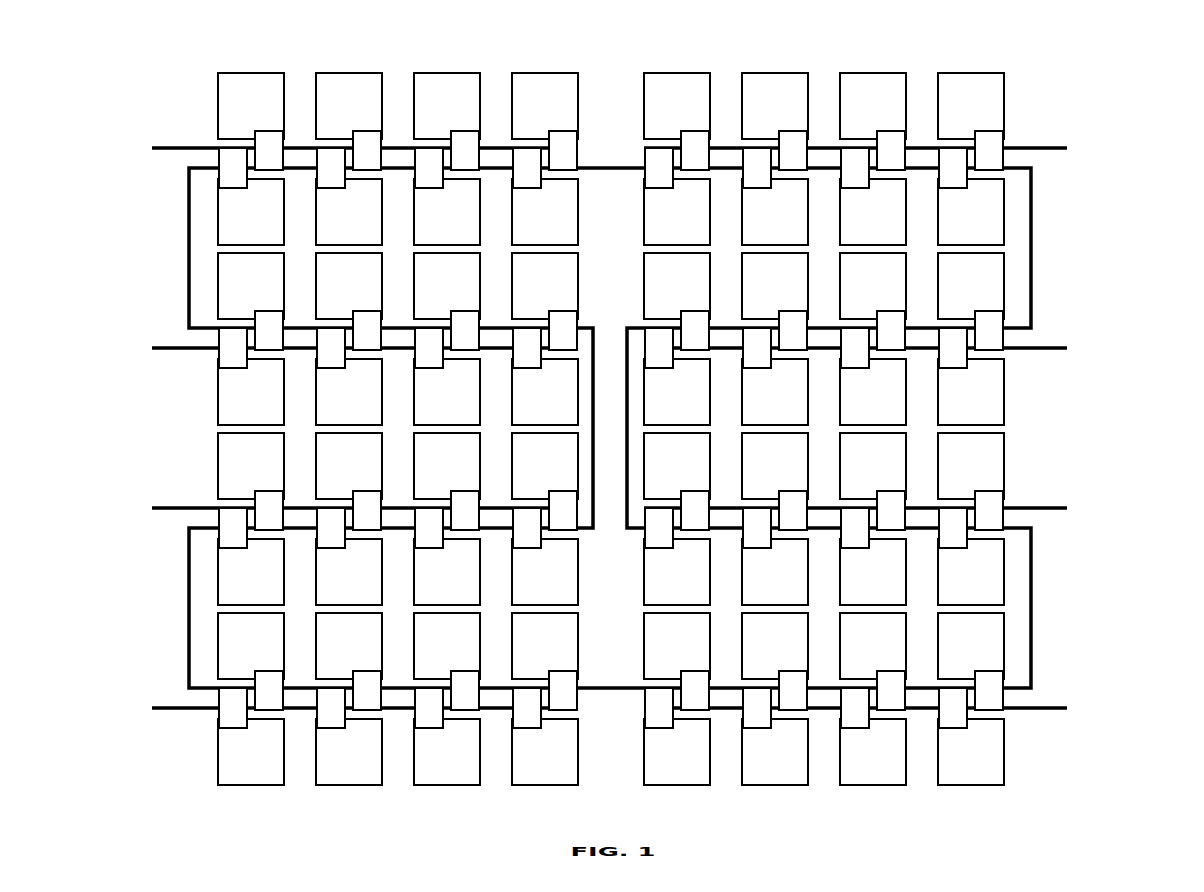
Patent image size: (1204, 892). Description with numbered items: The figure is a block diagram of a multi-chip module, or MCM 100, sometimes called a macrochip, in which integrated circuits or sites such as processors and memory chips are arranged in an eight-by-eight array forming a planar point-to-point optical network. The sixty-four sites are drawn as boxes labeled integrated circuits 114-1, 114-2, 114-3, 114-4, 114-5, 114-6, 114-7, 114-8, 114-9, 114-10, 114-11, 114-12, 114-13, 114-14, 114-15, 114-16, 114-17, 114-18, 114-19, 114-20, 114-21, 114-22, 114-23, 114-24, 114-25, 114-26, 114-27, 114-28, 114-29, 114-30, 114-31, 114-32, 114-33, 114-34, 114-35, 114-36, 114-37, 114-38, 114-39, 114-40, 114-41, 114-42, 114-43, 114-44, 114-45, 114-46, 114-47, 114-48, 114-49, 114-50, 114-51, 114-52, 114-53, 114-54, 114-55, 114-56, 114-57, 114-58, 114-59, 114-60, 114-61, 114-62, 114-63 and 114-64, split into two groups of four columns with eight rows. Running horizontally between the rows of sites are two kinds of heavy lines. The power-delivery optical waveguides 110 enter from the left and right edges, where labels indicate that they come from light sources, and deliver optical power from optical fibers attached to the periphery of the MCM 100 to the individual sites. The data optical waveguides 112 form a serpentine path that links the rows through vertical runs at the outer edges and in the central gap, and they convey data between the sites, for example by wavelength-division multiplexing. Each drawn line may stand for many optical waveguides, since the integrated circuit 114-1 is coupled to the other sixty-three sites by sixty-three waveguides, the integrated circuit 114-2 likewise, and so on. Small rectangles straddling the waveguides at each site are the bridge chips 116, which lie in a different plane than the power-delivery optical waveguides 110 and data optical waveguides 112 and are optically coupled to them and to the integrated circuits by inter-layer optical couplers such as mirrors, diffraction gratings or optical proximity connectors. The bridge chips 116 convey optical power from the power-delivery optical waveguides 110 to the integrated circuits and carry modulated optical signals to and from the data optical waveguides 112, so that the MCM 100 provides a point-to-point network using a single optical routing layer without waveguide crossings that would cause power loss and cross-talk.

The multi-chip module (MCM) 100 is at (615, 447).
The power-delivery optical waveguides 110 is at (182, 715).
The data optical waveguides 112 is at (187, 302).
The bridge chips 116 is at (544, 375).
The integrated circuit (IC) 114-1 is at (251, 106).
The integrated circuit (IC) 114-2 is at (349, 106).
The integrated circuit (IC) 114-3 is at (447, 106).
The integrated circuit (IC) 114-4 is at (545, 106).
The integrated circuit (IC) 114-5 is at (251, 212).
The integrated circuit (IC) 114-6 is at (349, 212).
The integrated circuit (IC) 114-7 is at (447, 212).
The integrated circuit (IC) 114-8 is at (545, 212).
The integrated circuit (IC) 114-9 is at (251, 286).
The integrated circuit (IC) 114-10 is at (349, 286).
The integrated circuit (IC) 114-11 is at (447, 286).
The integrated circuit (IC) 114-12 is at (545, 286).
The integrated circuit (IC) 114-13 is at (251, 392).
The integrated circuit (IC) 114-14 is at (349, 392).
The integrated circuit (IC) 114-15 is at (447, 392).
The integrated circuit (IC) 114-16 is at (545, 392).
The integrated circuit (IC) 114-17 is at (251, 466).
The integrated circuit (IC) 114-18 is at (349, 466).
The integrated circuit (IC) 114-19 is at (447, 466).
The integrated circuit (IC) 114-20 is at (545, 466).
The integrated circuit (IC) 114-21 is at (251, 572).
The integrated circuit (IC) 114-22 is at (349, 572).
The integrated circuit (IC) 114-23 is at (447, 572).
The integrated circuit (IC) 114-24 is at (545, 572).
The integrated circuit (IC) 114-25 is at (251, 646).
The integrated circuit (IC) 114-26 is at (349, 646).
The integrated circuit (IC) 114-27 is at (447, 646).
The integrated circuit (IC) 114-28 is at (545, 646).
The integrated circuit (IC) 114-29 is at (251, 752).
The integrated circuit (IC) 114-30 is at (349, 752).
The integrated circuit (IC) 114-31 is at (447, 752).
The integrated circuit (IC) 114-32 is at (545, 752).
The integrated circuit (IC) 114-33 is at (677, 106).
The integrated circuit (IC) 114-34 is at (775, 106).
The integrated circuit (IC) 114-35 is at (873, 106).
The integrated circuit (IC) 114-36 is at (971, 106).
The integrated circuit (IC) 114-37 is at (677, 212).
The integrated circuit (IC) 114-38 is at (775, 212).
The integrated circuit (IC) 114-39 is at (873, 212).
The integrated circuit (IC) 114-40 is at (971, 212).
The integrated circuit (IC) 114-41 is at (677, 286).
The integrated circuit (IC) 114-42 is at (775, 286).
The integrated circuit (IC) 114-43 is at (873, 286).
The integrated circuit (IC) 114-44 is at (971, 286).
The integrated circuit (IC) 114-45 is at (677, 392).
The integrated circuit (IC) 114-46 is at (775, 392).
The integrated circuit (IC) 114-47 is at (873, 392).
The integrated circuit (IC) 114-48 is at (971, 392).
The integrated circuit (IC) 114-49 is at (677, 466).
The integrated circuit (IC) 114-50 is at (775, 466).
The integrated circuit (IC) 114-51 is at (873, 466).
The integrated circuit (IC) 114-52 is at (971, 466).
The integrated circuit (IC) 114-53 is at (677, 572).
The integrated circuit (IC) 114-54 is at (775, 572).
The integrated circuit (IC) 114-55 is at (873, 572).
The integrated circuit (IC) 114-56 is at (971, 572).
The integrated circuit (IC) 114-57 is at (677, 646).
The integrated circuit (IC) 114-58 is at (775, 646).
The integrated circuit (IC) 114-59 is at (873, 646).
The integrated circuit (IC) 114-60 is at (971, 646).
The integrated circuit (IC) 114-61 is at (677, 752).
The integrated circuit (IC) 114-62 is at (775, 752).
The integrated circuit (IC) 114-63 is at (873, 752).
The integrated circuit (IC) 114-64 is at (971, 752).